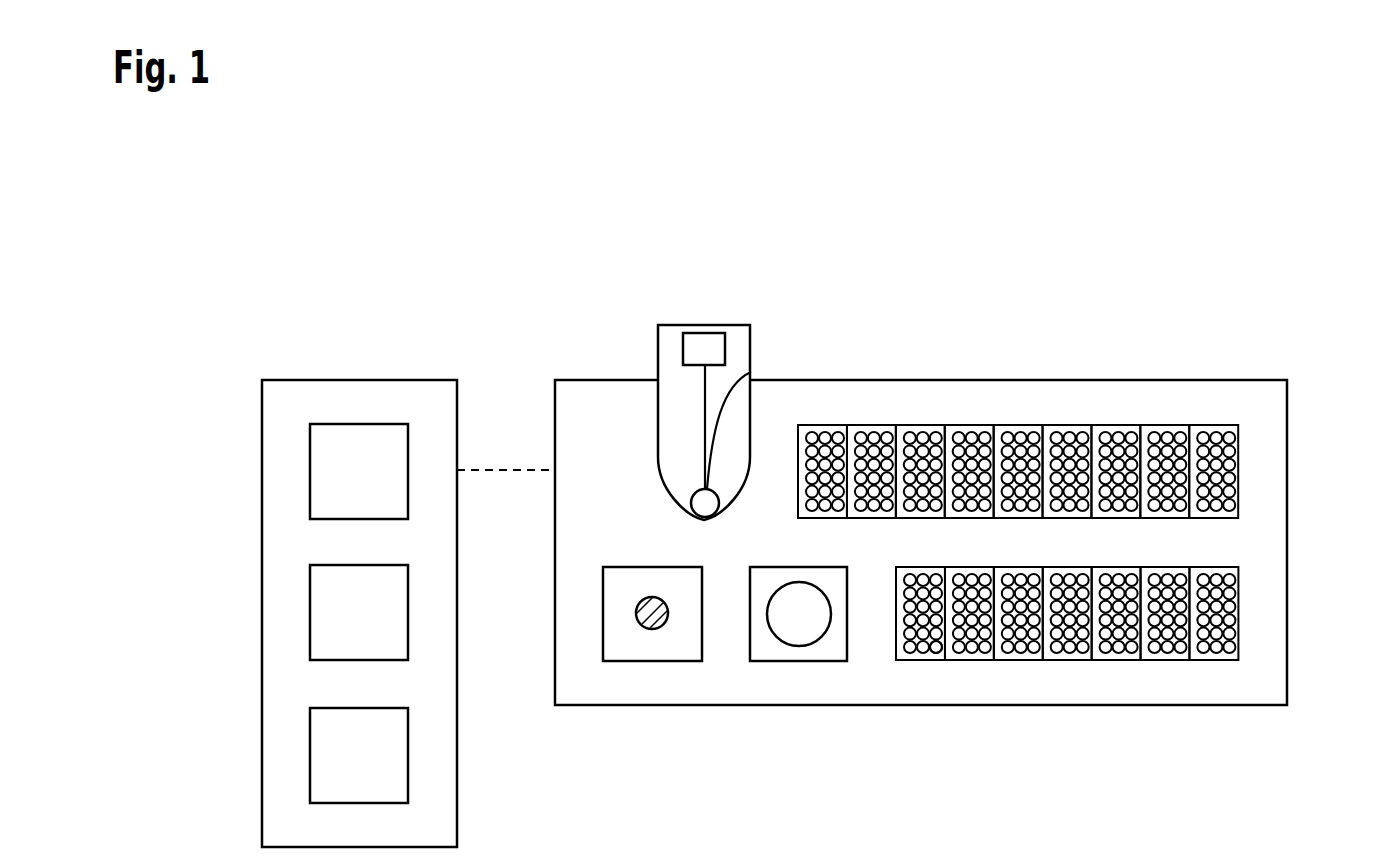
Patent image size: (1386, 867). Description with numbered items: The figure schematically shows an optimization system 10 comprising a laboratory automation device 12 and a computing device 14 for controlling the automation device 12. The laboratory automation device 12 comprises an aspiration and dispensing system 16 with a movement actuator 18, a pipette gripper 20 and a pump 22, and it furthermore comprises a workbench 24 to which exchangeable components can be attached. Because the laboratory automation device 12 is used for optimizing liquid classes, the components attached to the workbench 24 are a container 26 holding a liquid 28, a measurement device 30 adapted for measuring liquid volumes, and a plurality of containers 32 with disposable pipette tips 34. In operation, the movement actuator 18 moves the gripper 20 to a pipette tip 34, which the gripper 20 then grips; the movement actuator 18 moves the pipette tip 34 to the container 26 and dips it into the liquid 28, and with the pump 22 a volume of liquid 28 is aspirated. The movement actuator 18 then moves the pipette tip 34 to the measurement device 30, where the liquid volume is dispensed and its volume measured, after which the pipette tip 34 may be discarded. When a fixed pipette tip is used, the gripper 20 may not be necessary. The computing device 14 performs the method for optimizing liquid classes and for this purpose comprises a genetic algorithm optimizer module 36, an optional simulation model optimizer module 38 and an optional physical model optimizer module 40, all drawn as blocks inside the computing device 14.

The system 10 is at (1283, 150).
The laboratory automation device 12 is at (1138, 270).
The computing device 14 is at (363, 380).
The aspiration and dispensing system 16 is at (610, 266).
The movement actuator 18 is at (751, 346).
The pipette gripper 20 is at (751, 372).
The pump 22 is at (706, 333).
The workbench 24 is at (917, 380).
The container 26 is at (625, 661).
The liquid 28 is at (662, 627).
The measurement device 30 is at (826, 661).
The container 32 is at (903, 660).
The pipette tip 34 is at (934, 652).
The genetic algorithm optimizer module 36 is at (310, 469).
The simulation model optimizer module 38 is at (310, 612).
The physical model optimizer module 40 is at (310, 755).